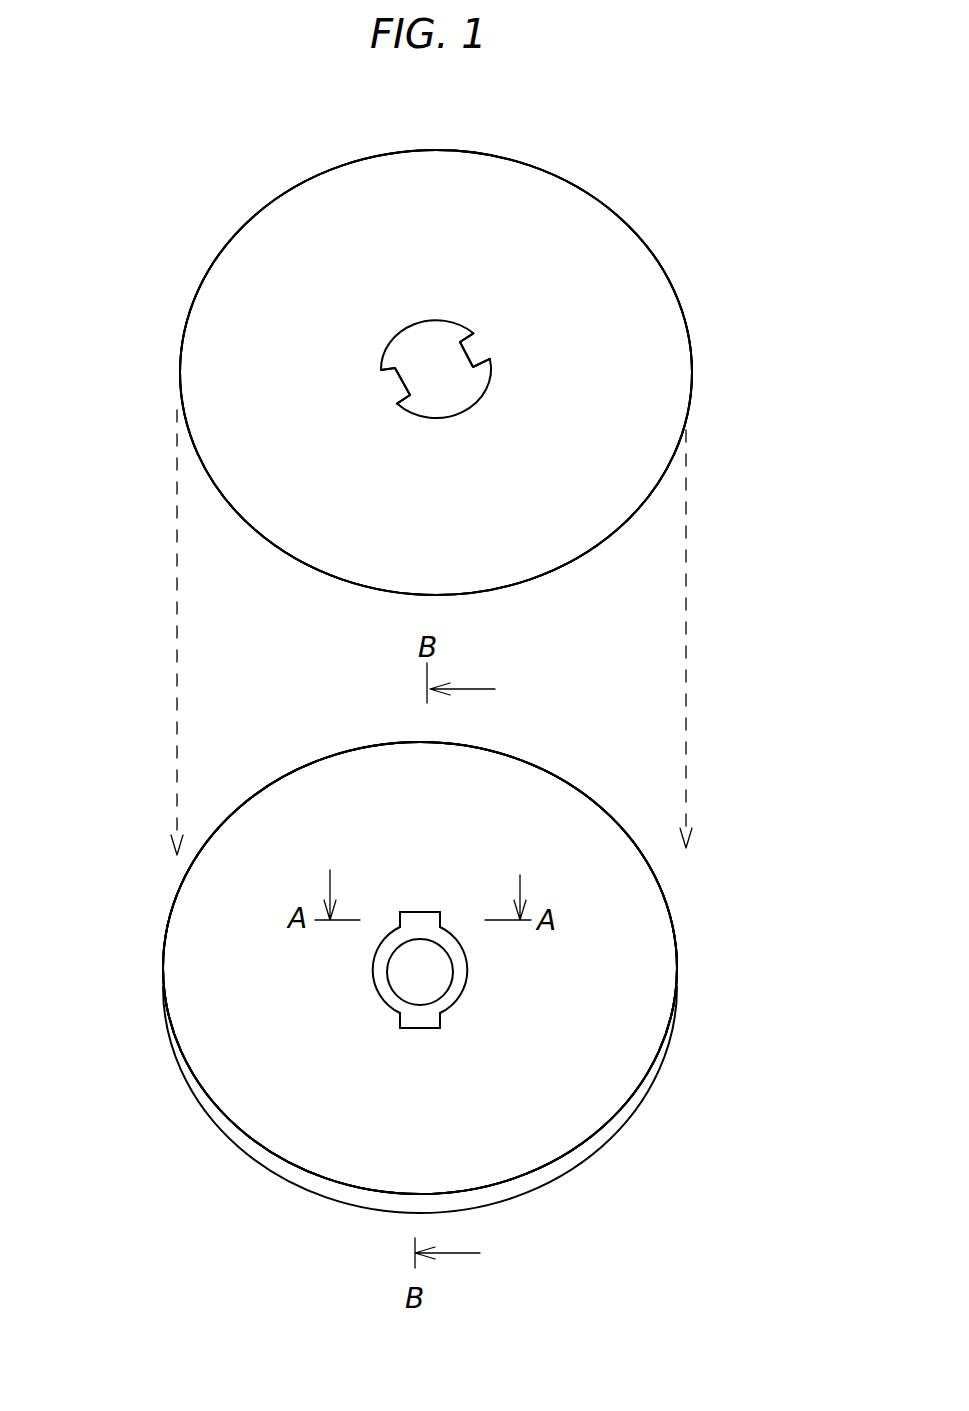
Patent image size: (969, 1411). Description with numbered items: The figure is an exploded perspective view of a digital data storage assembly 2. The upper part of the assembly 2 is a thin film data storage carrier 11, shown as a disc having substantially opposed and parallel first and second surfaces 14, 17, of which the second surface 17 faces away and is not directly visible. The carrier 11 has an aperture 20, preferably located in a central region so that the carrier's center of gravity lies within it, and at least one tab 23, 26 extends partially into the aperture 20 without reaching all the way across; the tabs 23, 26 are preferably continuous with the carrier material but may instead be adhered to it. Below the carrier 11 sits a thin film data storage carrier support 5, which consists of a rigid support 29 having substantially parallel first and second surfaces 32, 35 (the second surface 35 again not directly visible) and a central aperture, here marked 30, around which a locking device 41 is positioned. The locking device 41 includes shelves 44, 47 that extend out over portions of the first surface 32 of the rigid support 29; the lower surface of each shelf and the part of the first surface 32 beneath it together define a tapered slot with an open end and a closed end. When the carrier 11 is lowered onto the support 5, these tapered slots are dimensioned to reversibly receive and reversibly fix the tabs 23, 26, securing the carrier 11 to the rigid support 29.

The digital data storage assembly 2 is at (130, 1139).
The thin film data storage carrier support 5 is at (609, 1191).
The thin film data storage carrier 11 is at (620, 213).
The first surface 14 is at (650, 297).
The second surface 17 is at (636, 513).
The aperture 20 is at (447, 367).
The tab 23 is at (473, 350).
The tab 26 is at (393, 382).
The rigid support 29 is at (660, 883).
The first surface 32 is at (560, 780).
The second surface 35 is at (638, 1105).
The hub opening 30 is at (436, 980).
The locking device 41 is at (458, 967).
The shelf 44 is at (415, 912).
The shelf 47 is at (418, 1015).